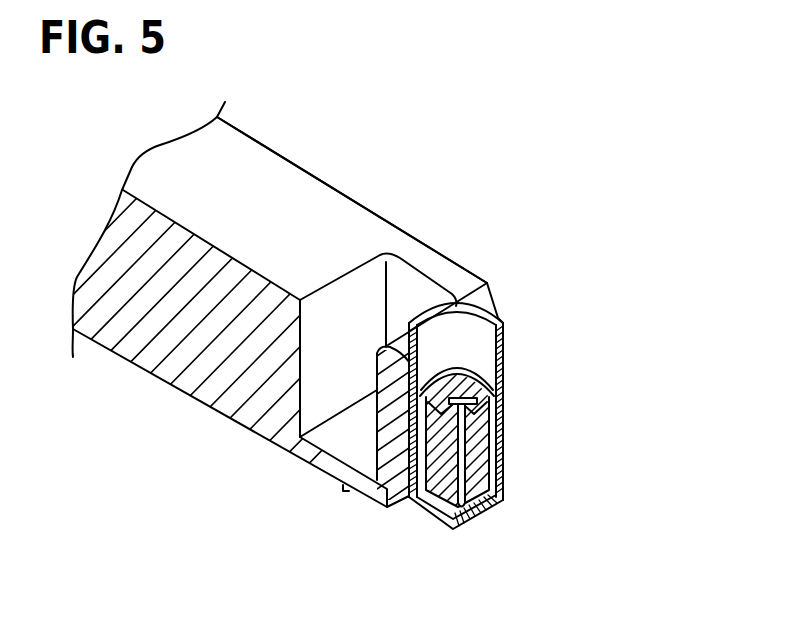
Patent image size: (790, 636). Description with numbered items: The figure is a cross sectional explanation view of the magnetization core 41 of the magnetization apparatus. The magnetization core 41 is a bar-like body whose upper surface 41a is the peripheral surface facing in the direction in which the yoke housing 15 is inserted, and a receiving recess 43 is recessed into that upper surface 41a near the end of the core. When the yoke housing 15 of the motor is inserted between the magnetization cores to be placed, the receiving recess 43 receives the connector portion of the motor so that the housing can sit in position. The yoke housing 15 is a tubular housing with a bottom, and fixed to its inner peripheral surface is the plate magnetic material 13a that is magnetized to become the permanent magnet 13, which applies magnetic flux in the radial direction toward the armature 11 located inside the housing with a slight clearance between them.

The magnetization core 41 is at (312, 172).
The upper surface 41a is at (346, 215).
The receiving recess 43 is at (424, 289).
The yoke housing 15 is at (505, 340).
The plate magnetic material 13a is at (551, 426).
The permanent magnet 13 is at (458, 386).
The armature 11 is at (503, 450).